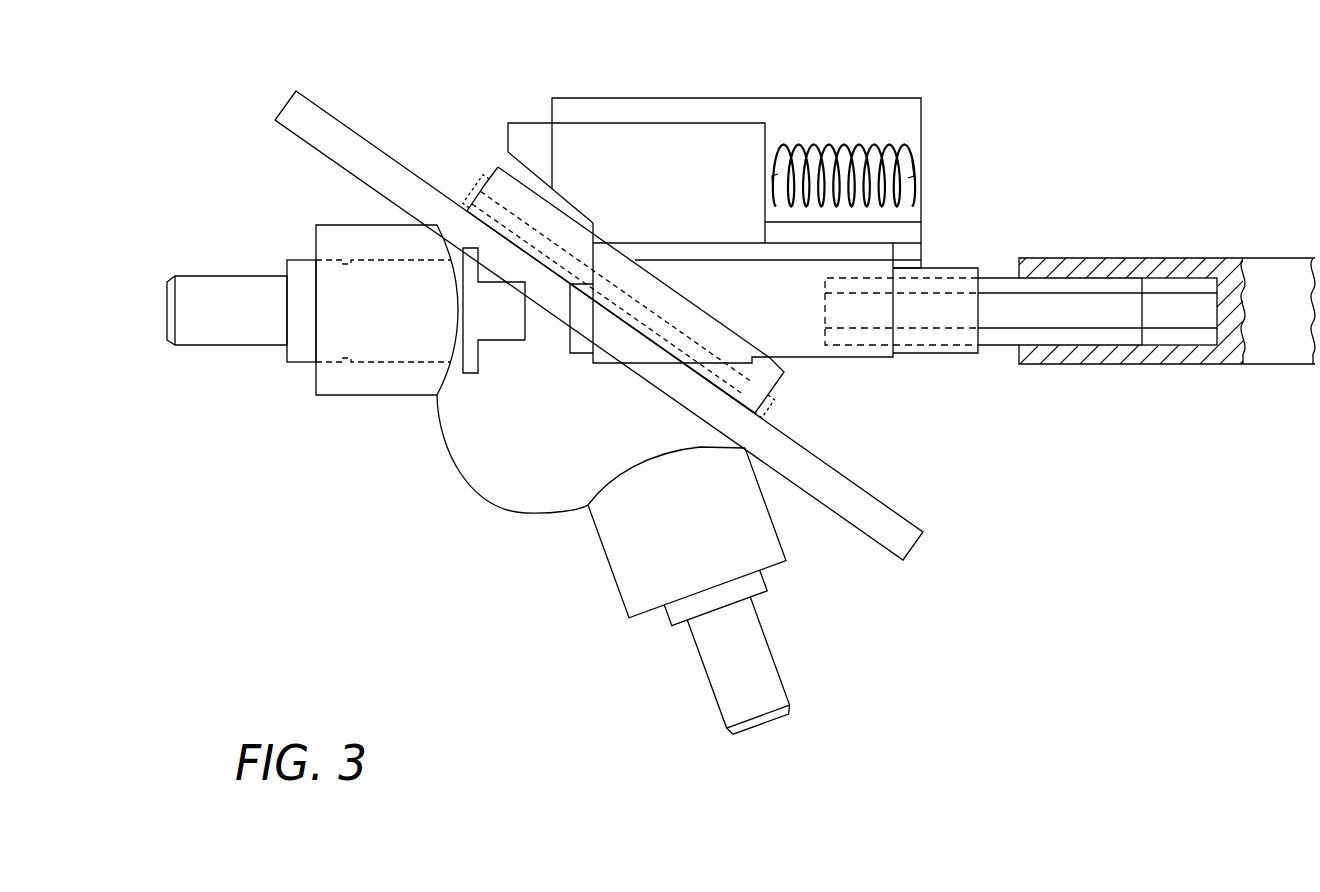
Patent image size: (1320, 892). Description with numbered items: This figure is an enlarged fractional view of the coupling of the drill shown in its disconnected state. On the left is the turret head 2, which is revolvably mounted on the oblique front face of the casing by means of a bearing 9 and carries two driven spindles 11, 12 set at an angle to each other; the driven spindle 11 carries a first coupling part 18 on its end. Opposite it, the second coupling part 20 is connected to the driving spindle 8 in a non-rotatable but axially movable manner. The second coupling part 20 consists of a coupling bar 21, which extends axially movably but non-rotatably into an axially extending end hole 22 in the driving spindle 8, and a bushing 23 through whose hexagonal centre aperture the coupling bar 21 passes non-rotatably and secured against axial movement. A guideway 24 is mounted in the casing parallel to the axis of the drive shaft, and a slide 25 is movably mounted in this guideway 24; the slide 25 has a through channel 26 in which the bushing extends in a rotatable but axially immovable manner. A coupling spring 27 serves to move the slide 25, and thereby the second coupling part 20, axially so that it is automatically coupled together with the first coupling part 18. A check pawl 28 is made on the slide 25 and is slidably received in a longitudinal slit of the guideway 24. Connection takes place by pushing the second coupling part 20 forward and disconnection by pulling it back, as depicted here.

The turret head 2 is at (475, 497).
The driving spindle 8 is at (1262, 258).
The bearing 9 is at (498, 167).
The driven spindle 11 is at (212, 347).
The driven spindle 12 is at (720, 718).
The first coupling part 18 is at (493, 343).
The second coupling part 20 is at (570, 353).
The coupling bar 21 is at (1003, 347).
The end hole 22 is at (1188, 333).
The bushing 23 is at (937, 355).
The guideway 24 is at (913, 240).
The slide 25 is at (825, 362).
The through channel 26 is at (587, 358).
The coupling spring 27 is at (912, 153).
The check pawl 28 is at (540, 133).